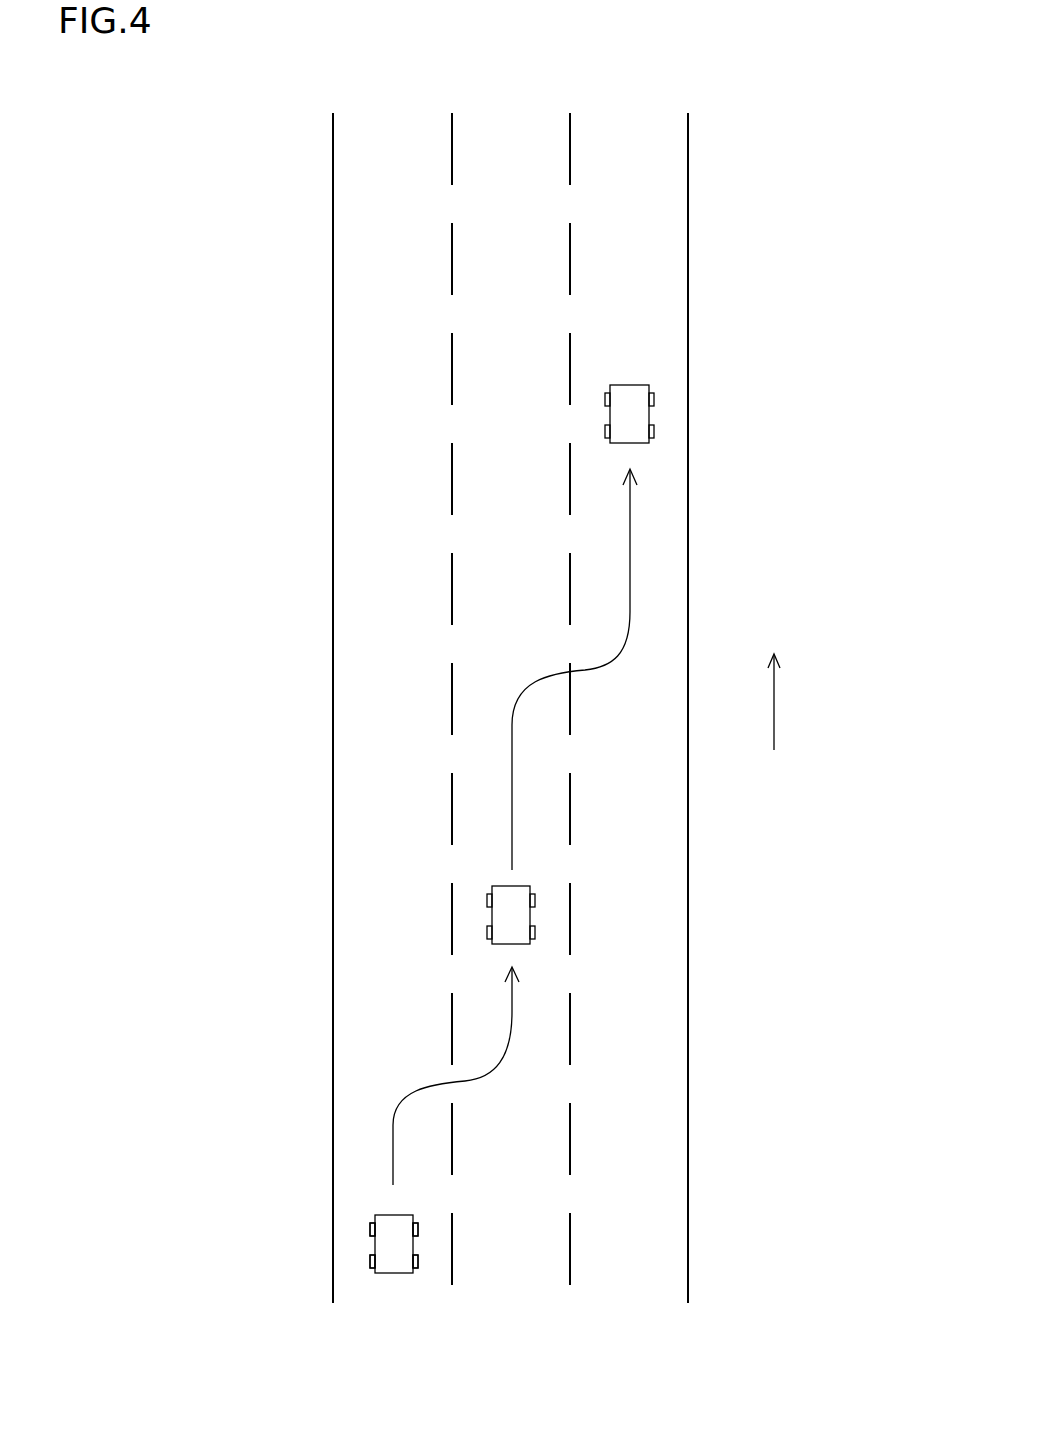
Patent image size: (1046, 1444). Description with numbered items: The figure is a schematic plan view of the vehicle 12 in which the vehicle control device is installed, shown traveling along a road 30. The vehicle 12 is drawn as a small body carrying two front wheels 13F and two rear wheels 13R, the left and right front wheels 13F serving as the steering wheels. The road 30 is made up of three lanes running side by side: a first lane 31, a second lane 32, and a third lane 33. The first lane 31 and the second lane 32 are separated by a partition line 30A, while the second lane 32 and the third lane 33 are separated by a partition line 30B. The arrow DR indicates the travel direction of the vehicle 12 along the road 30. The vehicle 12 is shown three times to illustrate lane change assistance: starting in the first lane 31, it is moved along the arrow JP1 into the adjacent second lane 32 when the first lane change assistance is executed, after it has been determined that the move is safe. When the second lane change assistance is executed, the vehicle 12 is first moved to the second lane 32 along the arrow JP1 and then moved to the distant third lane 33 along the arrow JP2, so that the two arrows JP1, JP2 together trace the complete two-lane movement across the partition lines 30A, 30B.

The vehicle 12 is at (656, 413).
The front wheels 13F is at (370, 1229).
The rear wheels 13R is at (370, 1261).
The road 30 is at (722, 182).
The partition line 30A is at (452, 375).
The partition line 30B is at (570, 257).
The first lane 31 is at (347, 241).
The second lane 32 is at (472, 160).
The third lane 33 is at (670, 251).
The arrow JP1 is at (474, 1080).
The arrow JP2 is at (596, 668).
The arrow DR is at (775, 700).